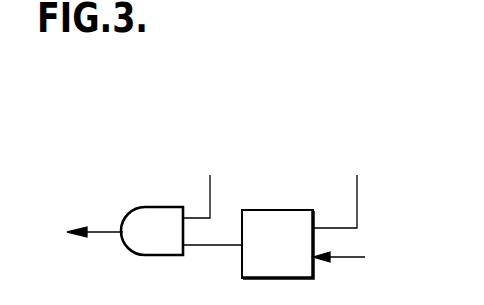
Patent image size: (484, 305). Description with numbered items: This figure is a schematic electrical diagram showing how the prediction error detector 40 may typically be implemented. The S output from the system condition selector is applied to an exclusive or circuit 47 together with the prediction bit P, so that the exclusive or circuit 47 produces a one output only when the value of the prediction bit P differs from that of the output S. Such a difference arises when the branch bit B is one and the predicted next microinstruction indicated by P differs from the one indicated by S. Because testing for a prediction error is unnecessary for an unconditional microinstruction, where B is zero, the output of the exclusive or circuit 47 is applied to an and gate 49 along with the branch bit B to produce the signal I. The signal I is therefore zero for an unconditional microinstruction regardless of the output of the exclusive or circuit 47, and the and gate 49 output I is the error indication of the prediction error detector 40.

The prediction error detector 40 is at (151, 195).
The exclusive or circuit 47 is at (242, 277).
The and gate 49 is at (142, 256).